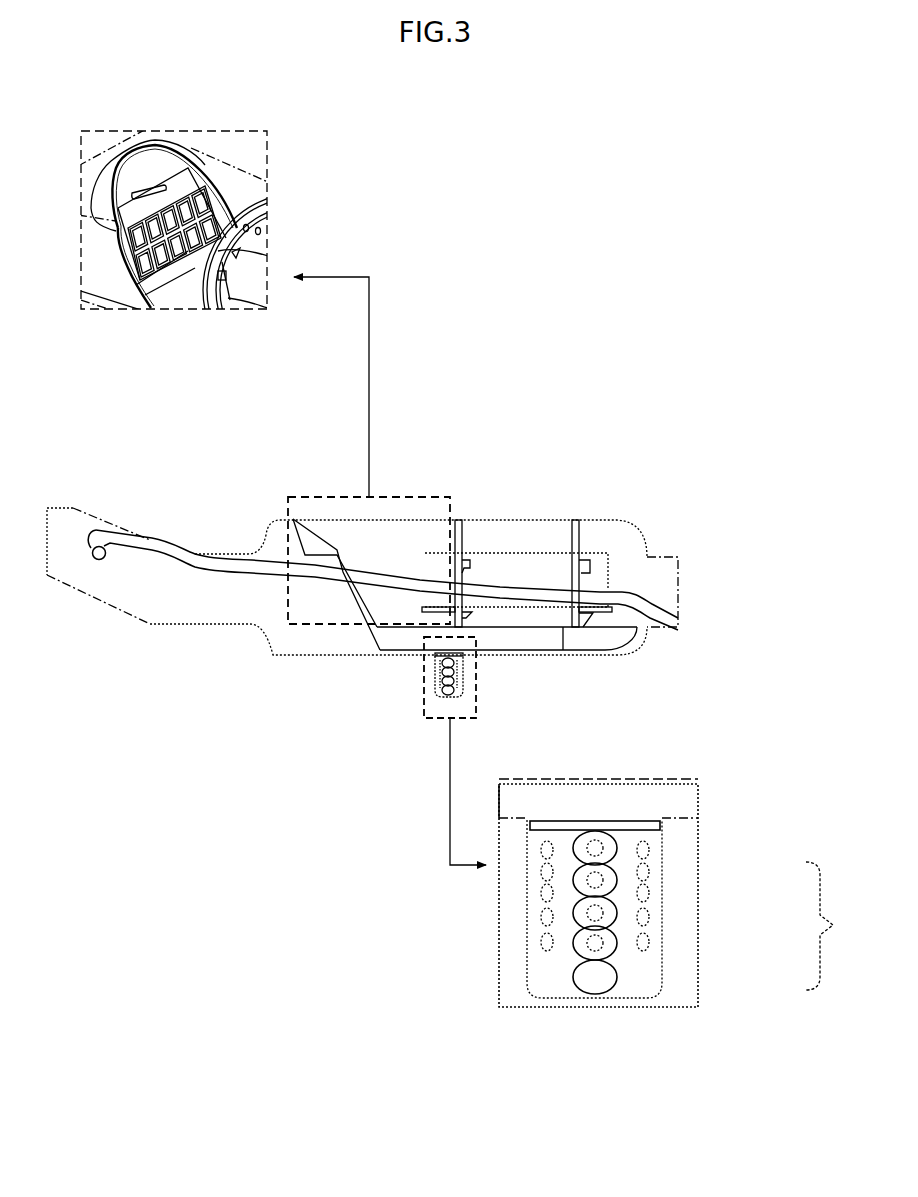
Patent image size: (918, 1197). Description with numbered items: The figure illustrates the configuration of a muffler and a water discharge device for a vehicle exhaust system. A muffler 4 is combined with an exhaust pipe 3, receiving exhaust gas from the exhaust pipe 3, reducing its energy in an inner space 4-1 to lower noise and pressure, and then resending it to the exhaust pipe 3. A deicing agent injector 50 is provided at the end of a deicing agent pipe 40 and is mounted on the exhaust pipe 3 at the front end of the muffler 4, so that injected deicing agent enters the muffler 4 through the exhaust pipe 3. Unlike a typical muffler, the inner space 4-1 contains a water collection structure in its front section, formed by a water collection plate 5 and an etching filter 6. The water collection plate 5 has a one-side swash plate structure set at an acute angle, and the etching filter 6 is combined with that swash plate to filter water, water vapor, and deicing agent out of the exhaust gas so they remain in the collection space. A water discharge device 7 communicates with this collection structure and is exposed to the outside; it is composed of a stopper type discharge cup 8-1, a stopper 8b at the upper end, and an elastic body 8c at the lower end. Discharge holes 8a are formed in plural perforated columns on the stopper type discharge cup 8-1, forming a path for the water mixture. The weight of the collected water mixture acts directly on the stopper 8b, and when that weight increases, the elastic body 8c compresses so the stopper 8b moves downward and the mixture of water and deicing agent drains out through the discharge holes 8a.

The exhaust pipe 3 is at (135, 605).
The muffler 4 is at (569, 445).
The inner space 4-1 is at (393, 510).
The water collection plate 5 is at (180, 297).
The etching filter 6 is at (190, 165).
The water discharge device 7 is at (828, 926).
The discharge holes 8a is at (541, 915).
The stopper 8b is at (662, 826).
The elastic body 8c is at (605, 915).
The stopper type discharge cup 8-1 is at (663, 973).
The deicing agent pipe 40 is at (625, 588).
The deicing agent injector 50 is at (102, 560).